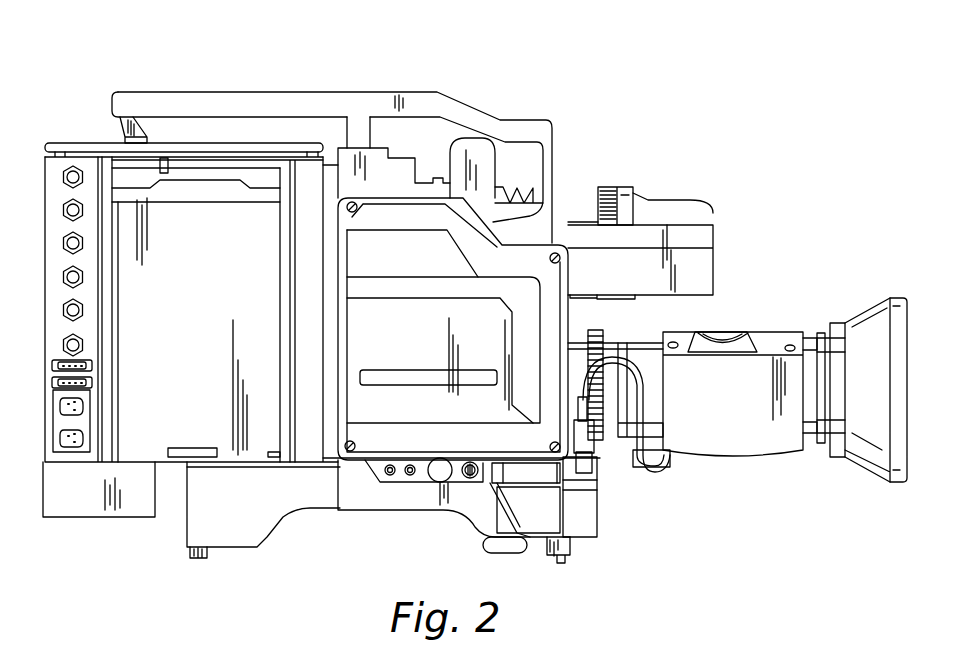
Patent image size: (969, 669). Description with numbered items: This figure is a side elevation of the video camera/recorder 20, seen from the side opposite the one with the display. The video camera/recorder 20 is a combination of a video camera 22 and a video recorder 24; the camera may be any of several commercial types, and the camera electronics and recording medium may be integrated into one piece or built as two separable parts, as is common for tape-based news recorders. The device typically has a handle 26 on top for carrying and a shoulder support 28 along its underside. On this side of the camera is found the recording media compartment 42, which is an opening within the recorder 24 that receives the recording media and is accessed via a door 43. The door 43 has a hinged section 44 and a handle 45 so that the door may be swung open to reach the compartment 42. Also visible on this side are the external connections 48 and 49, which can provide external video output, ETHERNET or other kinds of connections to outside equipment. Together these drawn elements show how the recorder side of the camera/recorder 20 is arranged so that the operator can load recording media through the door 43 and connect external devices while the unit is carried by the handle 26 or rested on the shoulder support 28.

The video camera/recorder 20 is at (506, 92).
The video camera 22 is at (530, 264).
The video recorder 24 is at (181, 153).
The handle 26 is at (402, 93).
The shoulder support 28 is at (417, 510).
The recording media compartment 42 is at (125, 202).
The door 43 is at (208, 293).
The hinged section 44 is at (265, 470).
The handle 45 is at (217, 186).
The external connection 48 is at (92, 374).
The external connection 49 is at (88, 420).